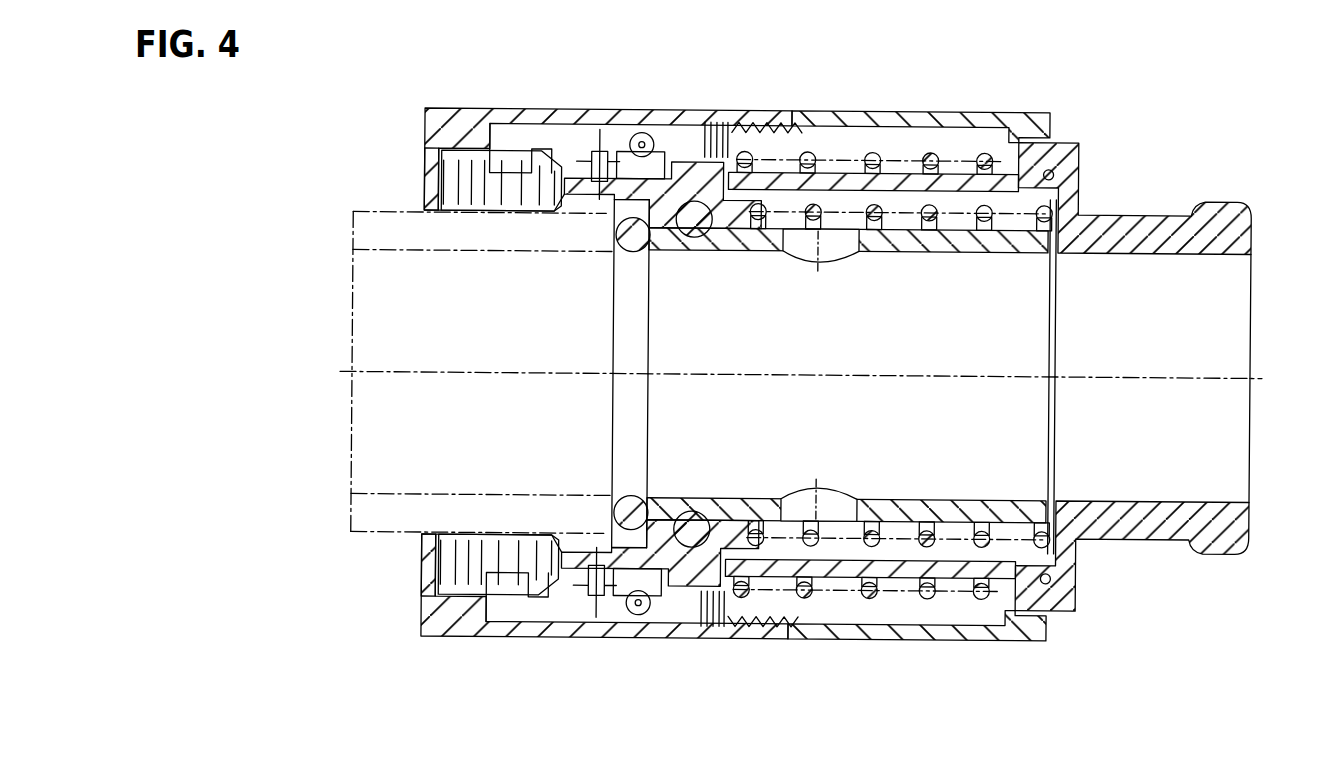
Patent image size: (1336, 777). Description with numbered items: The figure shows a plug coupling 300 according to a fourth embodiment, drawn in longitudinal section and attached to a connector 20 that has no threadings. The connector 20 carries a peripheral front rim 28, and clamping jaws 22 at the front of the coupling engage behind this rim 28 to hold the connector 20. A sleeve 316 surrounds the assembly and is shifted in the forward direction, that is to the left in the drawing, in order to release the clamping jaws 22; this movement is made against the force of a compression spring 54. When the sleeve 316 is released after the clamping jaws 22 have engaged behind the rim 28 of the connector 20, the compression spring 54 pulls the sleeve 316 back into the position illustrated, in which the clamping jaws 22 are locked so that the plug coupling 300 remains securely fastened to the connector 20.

The connector 20 is at (387, 516).
The clamping jaws 22 is at (425, 174).
The peripheral front rim 28 is at (578, 530).
The compression spring 54 is at (928, 158).
The plug coupling 300 is at (1118, 150).
The sleeve 316 is at (483, 117).